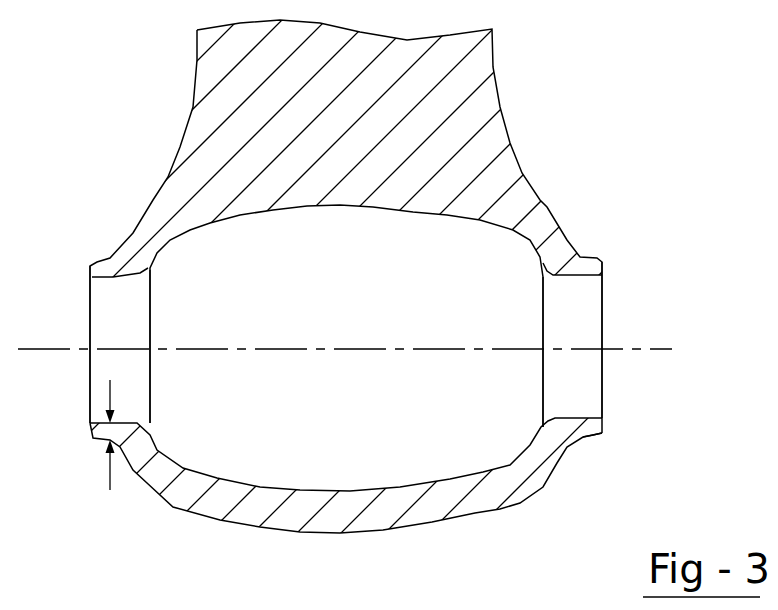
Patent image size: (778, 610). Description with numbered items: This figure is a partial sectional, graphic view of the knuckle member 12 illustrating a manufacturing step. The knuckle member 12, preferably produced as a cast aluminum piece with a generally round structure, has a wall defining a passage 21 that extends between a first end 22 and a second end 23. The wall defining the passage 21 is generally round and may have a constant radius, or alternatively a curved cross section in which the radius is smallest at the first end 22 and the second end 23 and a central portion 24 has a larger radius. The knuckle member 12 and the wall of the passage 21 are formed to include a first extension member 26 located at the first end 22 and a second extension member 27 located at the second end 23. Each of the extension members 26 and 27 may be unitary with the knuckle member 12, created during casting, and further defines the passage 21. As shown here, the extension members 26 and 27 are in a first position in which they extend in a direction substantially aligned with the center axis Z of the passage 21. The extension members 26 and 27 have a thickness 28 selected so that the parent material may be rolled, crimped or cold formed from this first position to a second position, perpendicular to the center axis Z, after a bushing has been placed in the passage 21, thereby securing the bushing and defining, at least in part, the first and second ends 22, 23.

The knuckle member 12 is at (517, 125).
The passage 21 is at (355, 490).
The first end 22 is at (88, 254).
The second end 23 is at (602, 245).
The central portion 24 is at (340, 548).
The first extension member 26 is at (97, 444).
The second extension member 27 is at (588, 436).
The thickness 28 is at (108, 393).
The center axis Z is at (643, 349).